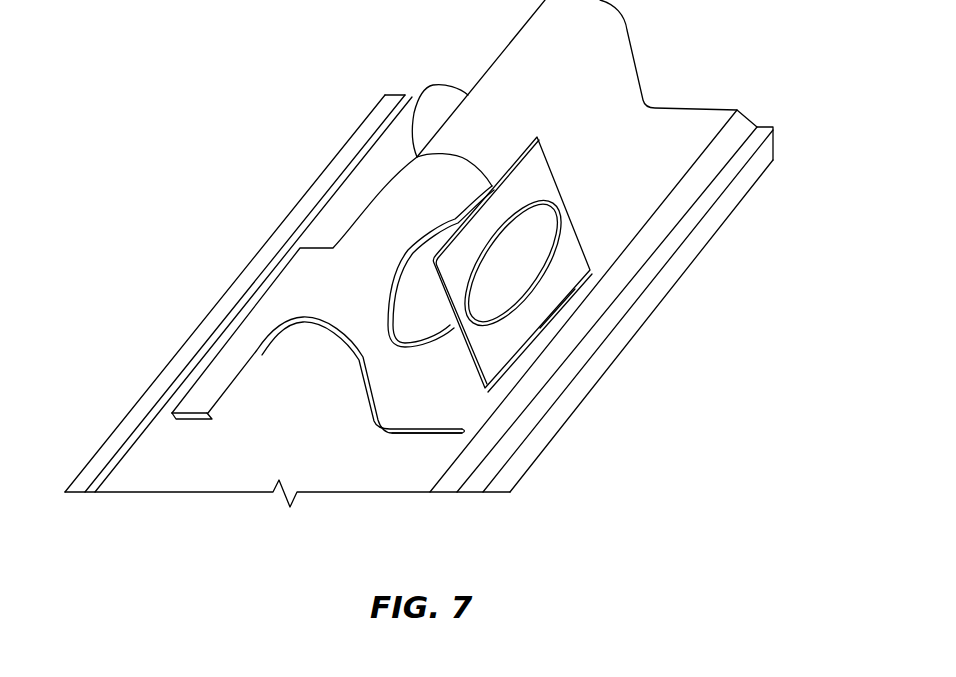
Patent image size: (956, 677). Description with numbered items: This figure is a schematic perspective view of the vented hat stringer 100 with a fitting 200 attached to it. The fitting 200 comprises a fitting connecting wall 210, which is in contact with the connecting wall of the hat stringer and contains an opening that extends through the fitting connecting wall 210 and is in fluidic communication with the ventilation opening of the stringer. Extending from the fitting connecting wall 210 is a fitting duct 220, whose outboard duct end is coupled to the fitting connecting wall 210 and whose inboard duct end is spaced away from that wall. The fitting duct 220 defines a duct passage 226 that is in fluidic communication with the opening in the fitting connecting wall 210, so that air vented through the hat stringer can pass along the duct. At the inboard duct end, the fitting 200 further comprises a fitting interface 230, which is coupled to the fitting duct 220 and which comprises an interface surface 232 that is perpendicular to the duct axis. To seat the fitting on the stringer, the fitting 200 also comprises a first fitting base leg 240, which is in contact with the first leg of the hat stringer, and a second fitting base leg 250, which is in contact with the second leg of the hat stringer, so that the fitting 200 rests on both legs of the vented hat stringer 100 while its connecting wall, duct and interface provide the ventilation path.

The vented hat stringer 100 is at (690, 87).
The fitting 200 is at (345, 212).
The fitting connecting wall 210 is at (443, 87).
The fitting duct 220 is at (423, 311).
The fitting interface 230 is at (775, 140).
The duct passage 226 is at (524, 253).
The interface surface 232 is at (546, 309).
The first fitting base leg 240 is at (453, 420).
The second fitting base leg 250 is at (212, 390).